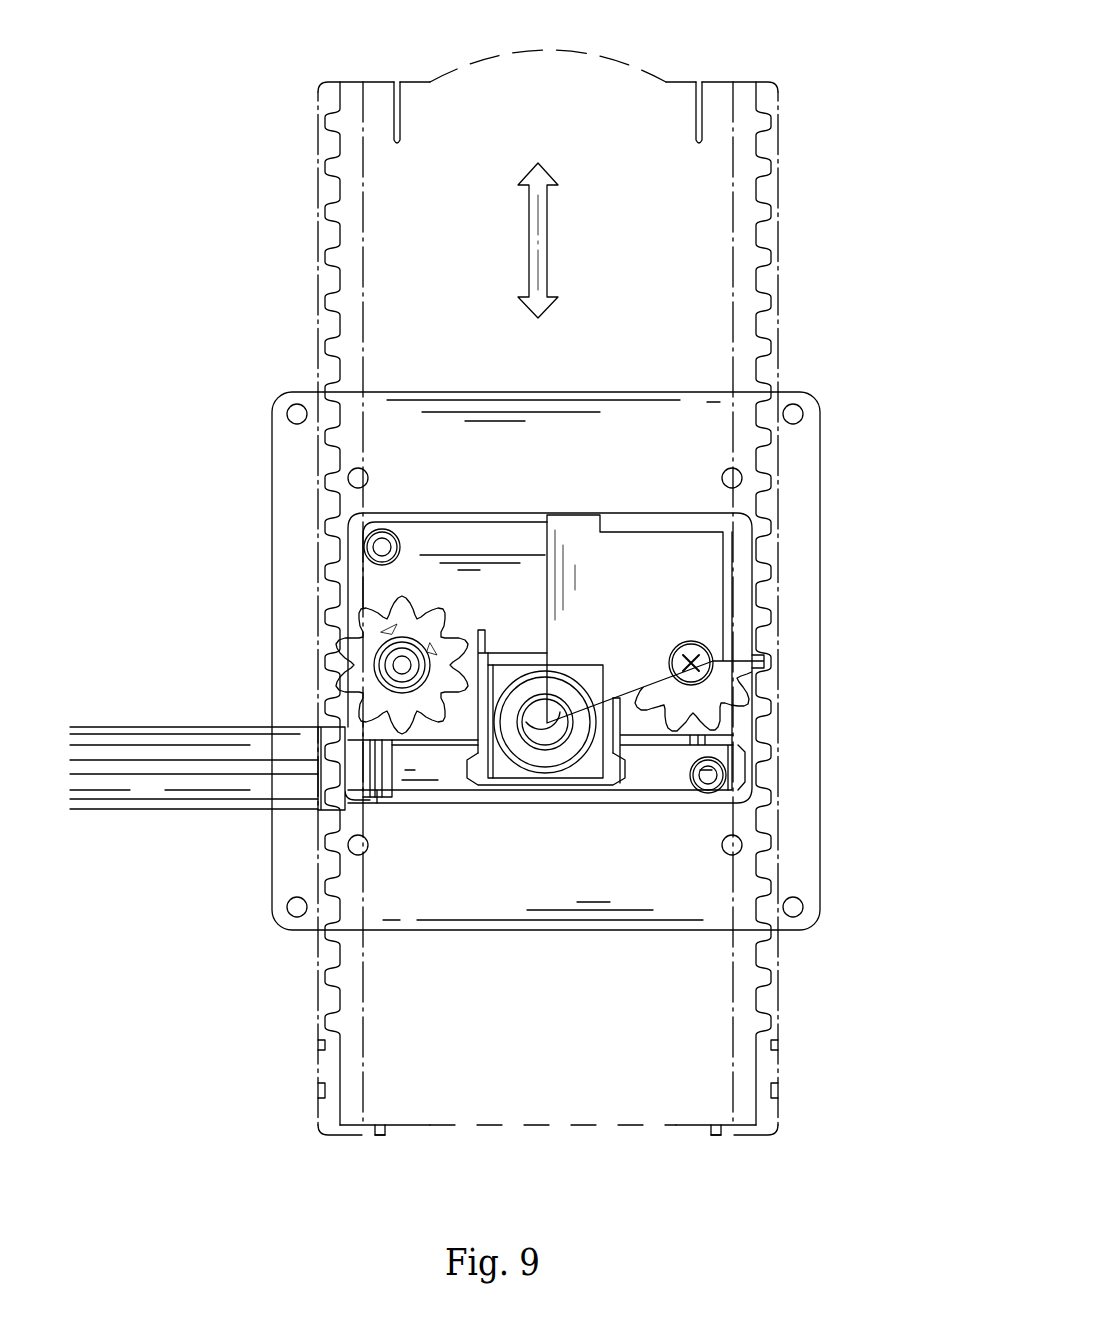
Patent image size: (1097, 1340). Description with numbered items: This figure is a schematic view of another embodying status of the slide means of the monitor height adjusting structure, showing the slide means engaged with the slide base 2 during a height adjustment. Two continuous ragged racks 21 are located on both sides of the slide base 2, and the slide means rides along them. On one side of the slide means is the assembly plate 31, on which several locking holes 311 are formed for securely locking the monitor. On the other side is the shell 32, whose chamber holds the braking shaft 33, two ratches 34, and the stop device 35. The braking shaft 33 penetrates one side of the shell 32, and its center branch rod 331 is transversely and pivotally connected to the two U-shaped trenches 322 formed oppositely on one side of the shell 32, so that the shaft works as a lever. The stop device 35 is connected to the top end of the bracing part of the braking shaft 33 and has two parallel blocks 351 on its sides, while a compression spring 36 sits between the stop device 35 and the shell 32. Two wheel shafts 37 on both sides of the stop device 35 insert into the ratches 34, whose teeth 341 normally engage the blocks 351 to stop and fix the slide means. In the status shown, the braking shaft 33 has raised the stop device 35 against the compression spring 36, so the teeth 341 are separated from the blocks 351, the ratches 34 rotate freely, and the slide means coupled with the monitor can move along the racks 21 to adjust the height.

The slide base 2 is at (736, 80).
The racks 21 is at (762, 278).
The assembly plate 31 is at (806, 492).
The locking holes 311 is at (799, 408).
The shell 32 is at (718, 599).
The U-shaped trenches 322 is at (368, 802).
The braking shaft 33 is at (218, 736).
The center branch rod 331 is at (372, 797).
The ratches 34 is at (346, 629).
The teeth 341 is at (471, 655).
The stop device 35 is at (583, 793).
The blocks 351 is at (471, 772).
The compression spring 36 is at (545, 750).
The wheel shafts 37 is at (401, 665).